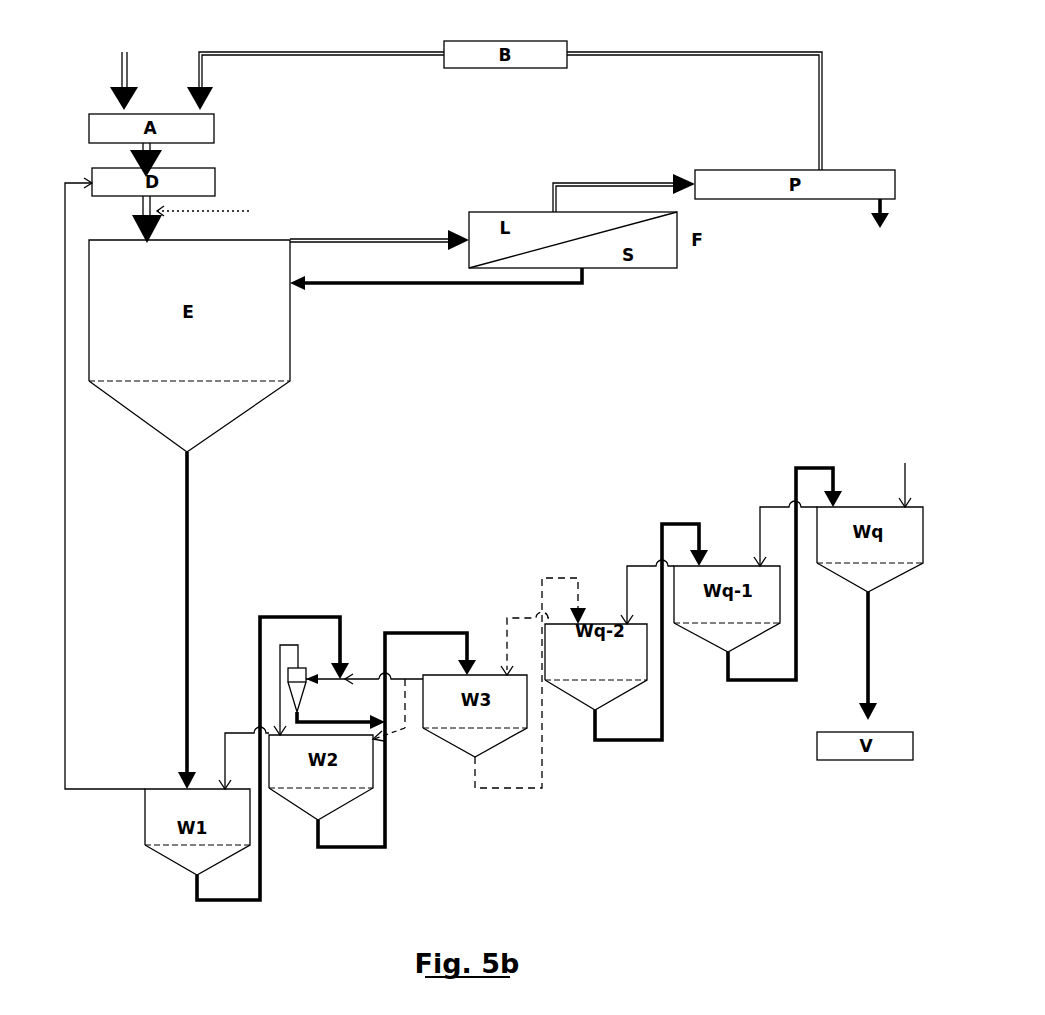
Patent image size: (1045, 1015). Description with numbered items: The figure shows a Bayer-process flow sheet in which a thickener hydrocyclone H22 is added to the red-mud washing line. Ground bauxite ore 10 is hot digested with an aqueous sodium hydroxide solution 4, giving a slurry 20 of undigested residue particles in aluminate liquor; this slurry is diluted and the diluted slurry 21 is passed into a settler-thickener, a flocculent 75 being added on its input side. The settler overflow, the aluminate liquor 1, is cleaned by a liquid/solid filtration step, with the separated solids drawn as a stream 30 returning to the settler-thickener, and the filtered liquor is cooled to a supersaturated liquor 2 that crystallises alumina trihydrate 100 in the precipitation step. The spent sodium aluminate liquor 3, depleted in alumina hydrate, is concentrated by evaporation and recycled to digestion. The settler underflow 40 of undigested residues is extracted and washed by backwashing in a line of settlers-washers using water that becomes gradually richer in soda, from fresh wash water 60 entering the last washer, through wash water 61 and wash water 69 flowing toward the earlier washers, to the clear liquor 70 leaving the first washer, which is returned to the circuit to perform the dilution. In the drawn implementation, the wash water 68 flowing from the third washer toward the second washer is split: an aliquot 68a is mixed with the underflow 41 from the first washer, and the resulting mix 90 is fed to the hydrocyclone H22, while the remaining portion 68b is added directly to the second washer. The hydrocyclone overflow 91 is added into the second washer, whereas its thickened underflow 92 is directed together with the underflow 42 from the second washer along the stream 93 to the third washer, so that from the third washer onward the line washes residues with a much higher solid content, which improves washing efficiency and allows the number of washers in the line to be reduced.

The ground bauxite ore 10 is at (124, 71).
The aqueous solution of sodium hydroxide 4 is at (315, 65).
The sodium aluminate liquor 3 is at (694, 95).
The slurry 20 is at (166, 160).
The slurry after digestion and dilution 21 is at (130, 219).
The flocculent 75 is at (218, 212).
The clear liquor 70 is at (89, 483).
The aluminate liquor 1 is at (379, 226).
The liquor 2 is at (624, 179).
The alumina trihydrate 100 is at (878, 223).
The solids return stream to E 30 is at (436, 293).
The underflow 40 is at (204, 620).
The underflow from the first washer 41 is at (273, 746).
The wash water 69 is at (236, 748).
The underflow from the second washer 42 is at (351, 754).
The stream from W2 to W3 93 is at (430, 641).
The hydrocyclone H22 is at (296, 694).
The overflow from the hydrocyclone 91 is at (285, 679).
The underflow from the hydrocyclone 92 is at (341, 716).
The mix 90 is at (342, 668).
The aliquot of wash water 68a is at (363, 668).
The wash liquid stream 68 is at (403, 689).
The wash liquid branch to W2 68b is at (403, 740).
The wash water 61 is at (781, 523).
The wash water 60 is at (905, 473).